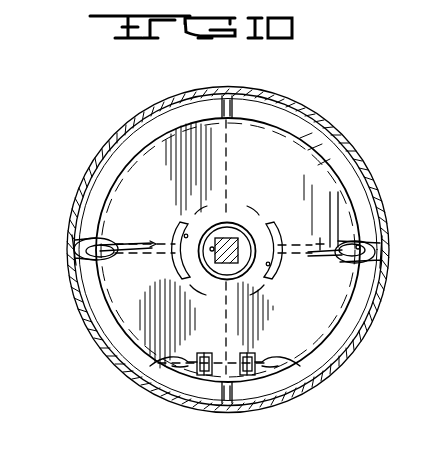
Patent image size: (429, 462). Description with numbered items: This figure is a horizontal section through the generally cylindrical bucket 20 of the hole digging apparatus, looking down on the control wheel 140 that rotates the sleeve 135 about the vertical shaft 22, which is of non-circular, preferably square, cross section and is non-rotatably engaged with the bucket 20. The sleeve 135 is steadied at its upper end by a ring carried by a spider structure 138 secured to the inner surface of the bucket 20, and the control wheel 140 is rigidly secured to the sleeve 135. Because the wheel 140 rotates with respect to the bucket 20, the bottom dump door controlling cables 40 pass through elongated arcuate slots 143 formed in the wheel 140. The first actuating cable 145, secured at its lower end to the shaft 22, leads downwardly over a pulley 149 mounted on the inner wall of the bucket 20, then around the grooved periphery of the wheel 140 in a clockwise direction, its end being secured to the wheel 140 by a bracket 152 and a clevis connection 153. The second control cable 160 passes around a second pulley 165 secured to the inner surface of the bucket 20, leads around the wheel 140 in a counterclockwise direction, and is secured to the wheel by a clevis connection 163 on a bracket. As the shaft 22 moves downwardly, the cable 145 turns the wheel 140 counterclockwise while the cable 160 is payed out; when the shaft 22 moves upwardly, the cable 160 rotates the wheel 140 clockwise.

The bucket 20 is at (114, 142).
The vertical shaft 22 is at (252, 222).
The bottom dump door controlling cables 40 is at (178, 238).
The sleeve 135 is at (225, 222).
The spider structure 138 is at (231, 104).
The control wheel 140 is at (112, 318).
The elongated arcuate slots 143 is at (267, 228).
The first actuating cable 145 is at (197, 228).
The pulley 149 is at (74, 268).
The bracket 152 is at (243, 383).
The clevis connection 153 is at (273, 373).
The second control cable 160 is at (319, 221).
The clevis connection 163 is at (190, 370).
The second pulley 165 is at (380, 265).